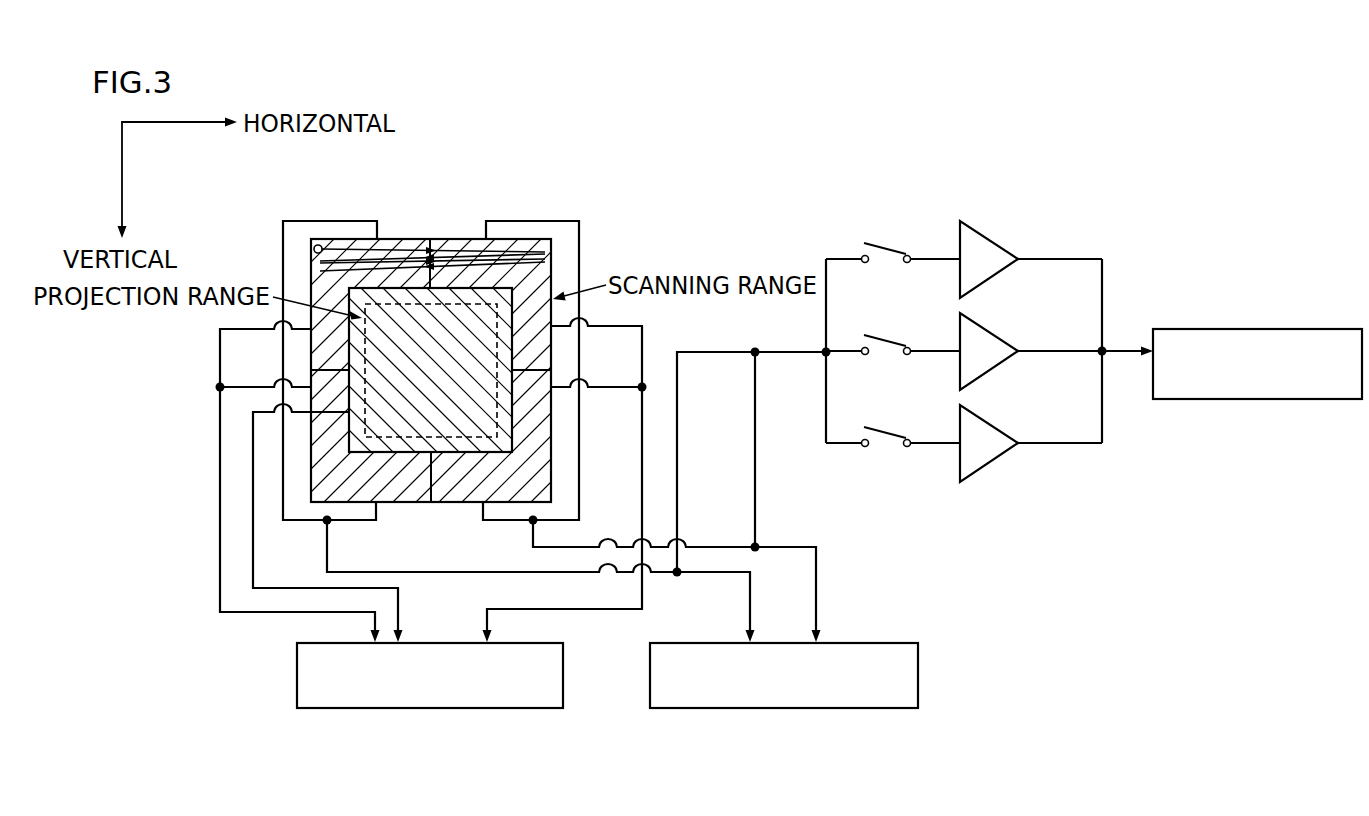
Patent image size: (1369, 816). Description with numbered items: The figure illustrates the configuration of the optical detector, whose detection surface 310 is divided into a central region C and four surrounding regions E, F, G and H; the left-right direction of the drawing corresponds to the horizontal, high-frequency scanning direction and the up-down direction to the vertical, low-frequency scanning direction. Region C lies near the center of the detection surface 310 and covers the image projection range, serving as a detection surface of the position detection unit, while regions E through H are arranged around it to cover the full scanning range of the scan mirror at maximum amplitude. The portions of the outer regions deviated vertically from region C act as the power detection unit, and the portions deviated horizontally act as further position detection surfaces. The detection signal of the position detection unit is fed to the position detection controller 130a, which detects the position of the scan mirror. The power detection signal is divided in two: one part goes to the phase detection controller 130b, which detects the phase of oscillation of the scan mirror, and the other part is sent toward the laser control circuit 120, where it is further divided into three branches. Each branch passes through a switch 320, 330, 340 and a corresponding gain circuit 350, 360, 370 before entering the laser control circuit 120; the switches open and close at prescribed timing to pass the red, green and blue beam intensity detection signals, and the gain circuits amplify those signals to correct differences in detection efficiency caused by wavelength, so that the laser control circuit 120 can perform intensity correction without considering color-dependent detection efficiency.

The detection surface 310 is at (402, 238).
The switch 320 is at (886, 244).
The switch 330 is at (886, 336).
The switch 340 is at (886, 428).
The gain circuit 350 is at (988, 234).
The gain circuit 360 is at (988, 327).
The gain circuit 370 is at (988, 420).
The laser control circuit 120 is at (1280, 329).
The position detection controller 130a is at (297, 677).
The phase detection controller 130b is at (650, 677).